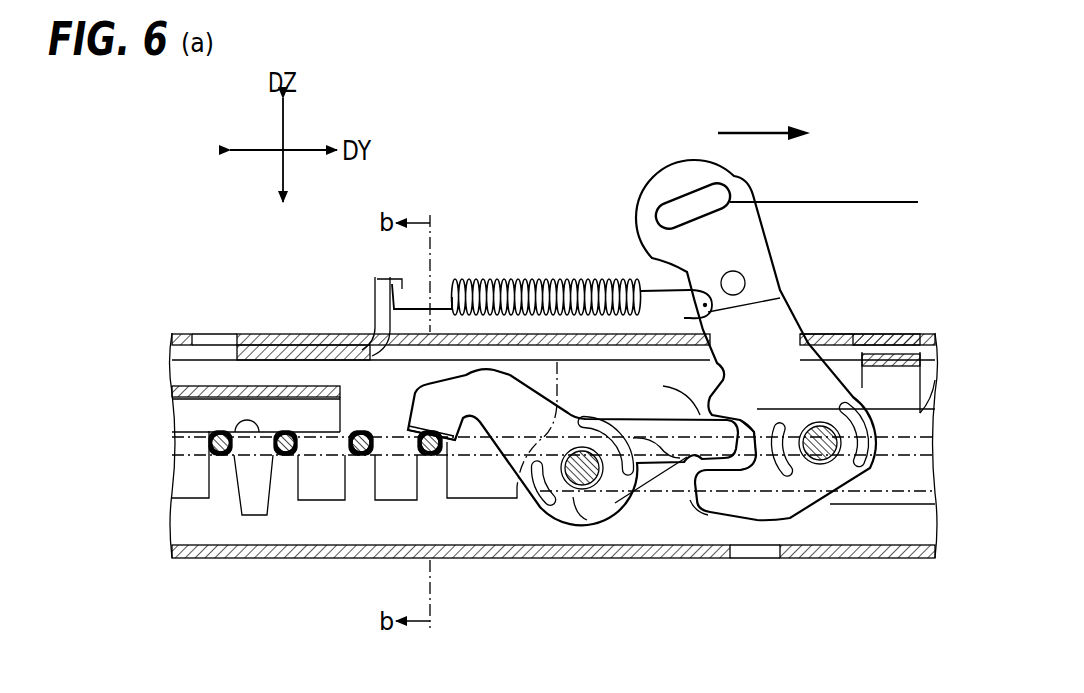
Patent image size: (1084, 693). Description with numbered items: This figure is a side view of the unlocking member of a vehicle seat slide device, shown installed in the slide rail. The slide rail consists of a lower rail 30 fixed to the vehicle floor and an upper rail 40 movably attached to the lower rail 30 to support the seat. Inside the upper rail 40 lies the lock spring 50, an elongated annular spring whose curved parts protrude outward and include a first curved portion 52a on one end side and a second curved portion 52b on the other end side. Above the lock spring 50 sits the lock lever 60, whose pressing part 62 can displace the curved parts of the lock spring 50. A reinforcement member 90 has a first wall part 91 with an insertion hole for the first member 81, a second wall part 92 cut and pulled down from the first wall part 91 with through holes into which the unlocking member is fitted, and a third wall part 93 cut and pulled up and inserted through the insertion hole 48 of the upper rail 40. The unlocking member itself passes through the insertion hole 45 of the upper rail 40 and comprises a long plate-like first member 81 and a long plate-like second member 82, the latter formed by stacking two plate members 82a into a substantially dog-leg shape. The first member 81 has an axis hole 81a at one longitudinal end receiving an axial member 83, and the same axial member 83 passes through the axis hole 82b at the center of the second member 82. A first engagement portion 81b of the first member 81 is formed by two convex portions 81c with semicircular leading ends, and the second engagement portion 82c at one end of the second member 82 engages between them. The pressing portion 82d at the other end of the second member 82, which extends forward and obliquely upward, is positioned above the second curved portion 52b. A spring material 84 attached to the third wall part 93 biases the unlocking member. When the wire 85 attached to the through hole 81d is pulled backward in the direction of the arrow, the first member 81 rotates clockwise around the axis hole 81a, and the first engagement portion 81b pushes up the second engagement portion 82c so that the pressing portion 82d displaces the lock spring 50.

The lower rail 30 is at (230, 560).
The upper rail 40 is at (240, 336).
The insertion hole 45 is at (880, 338).
The insertion hole 48 is at (372, 335).
The lock spring 50 is at (935, 412).
The first curved portion 52a is at (218, 457).
The second curved portion 52b is at (358, 457).
The lock lever 60 is at (258, 386).
The pressing part 62 is at (320, 458).
The first member 81 is at (780, 270).
The axis hole 81a is at (812, 422).
The first engagement portion 81b is at (730, 518).
The convex portion 81c is at (662, 387).
The through hole 81d is at (665, 210).
The second member 82 is at (413, 392).
The plate member 82a is at (520, 512).
The axis hole 82b is at (610, 500).
The second engagement portion 82c is at (750, 418).
The pressing portion 82d is at (463, 446).
The axial member 83 is at (583, 490).
The spring material 84 is at (522, 279).
The wire 85 is at (846, 202).
The reinforcement member 90 is at (870, 348).
The first wall part 91 is at (858, 336).
The second wall part 92 is at (940, 395).
The third wall part 93 is at (375, 278).